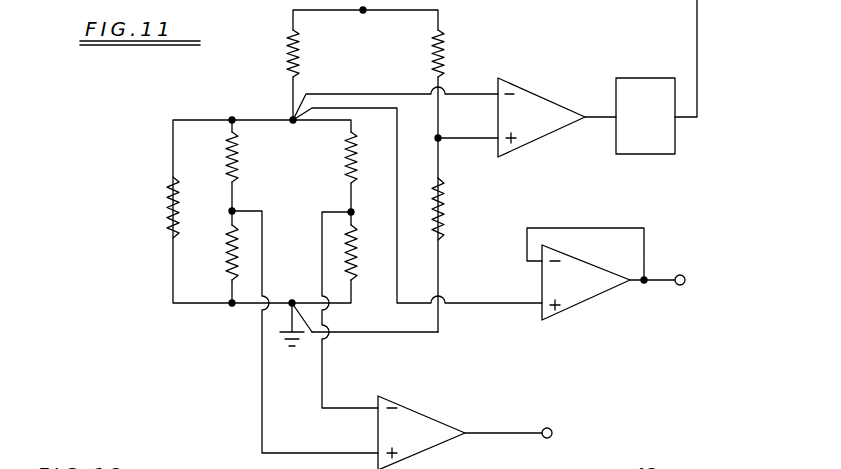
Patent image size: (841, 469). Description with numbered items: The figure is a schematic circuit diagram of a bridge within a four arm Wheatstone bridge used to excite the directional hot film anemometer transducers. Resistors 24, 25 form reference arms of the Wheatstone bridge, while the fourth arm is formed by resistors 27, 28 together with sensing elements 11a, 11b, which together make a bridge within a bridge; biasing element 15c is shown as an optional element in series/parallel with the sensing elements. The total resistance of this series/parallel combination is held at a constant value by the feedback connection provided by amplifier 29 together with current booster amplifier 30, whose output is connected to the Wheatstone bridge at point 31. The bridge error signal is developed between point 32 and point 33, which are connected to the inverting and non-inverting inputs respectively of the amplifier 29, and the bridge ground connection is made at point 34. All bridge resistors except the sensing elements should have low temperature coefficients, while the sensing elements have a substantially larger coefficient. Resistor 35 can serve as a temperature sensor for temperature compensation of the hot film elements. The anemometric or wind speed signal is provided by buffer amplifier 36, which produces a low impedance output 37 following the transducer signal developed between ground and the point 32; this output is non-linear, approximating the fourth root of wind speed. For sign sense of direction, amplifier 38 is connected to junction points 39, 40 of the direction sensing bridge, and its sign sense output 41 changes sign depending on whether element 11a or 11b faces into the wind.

The sensing element 11a is at (238, 161).
The sensing element 11b is at (227, 246).
The biasing element 15c is at (166, 218).
The resistor 24 is at (289, 51).
The resistor 25 is at (443, 48).
The resistor 27 is at (345, 152).
The resistor 28 is at (362, 250).
The amplifier 29 is at (544, 100).
The current booster amplifier 30 is at (646, 78).
The point 31 is at (363, 12).
The point 32 is at (290, 118).
The point 33 is at (440, 140).
The point 34 is at (291, 300).
The resistor 35 is at (446, 211).
The buffer amplifier 36 is at (583, 303).
The output 37 is at (684, 275).
The amplifier 38 is at (438, 423).
The junction point 39 is at (236, 209).
The junction point 40 is at (353, 210).
The sign sense output 41 is at (552, 428).